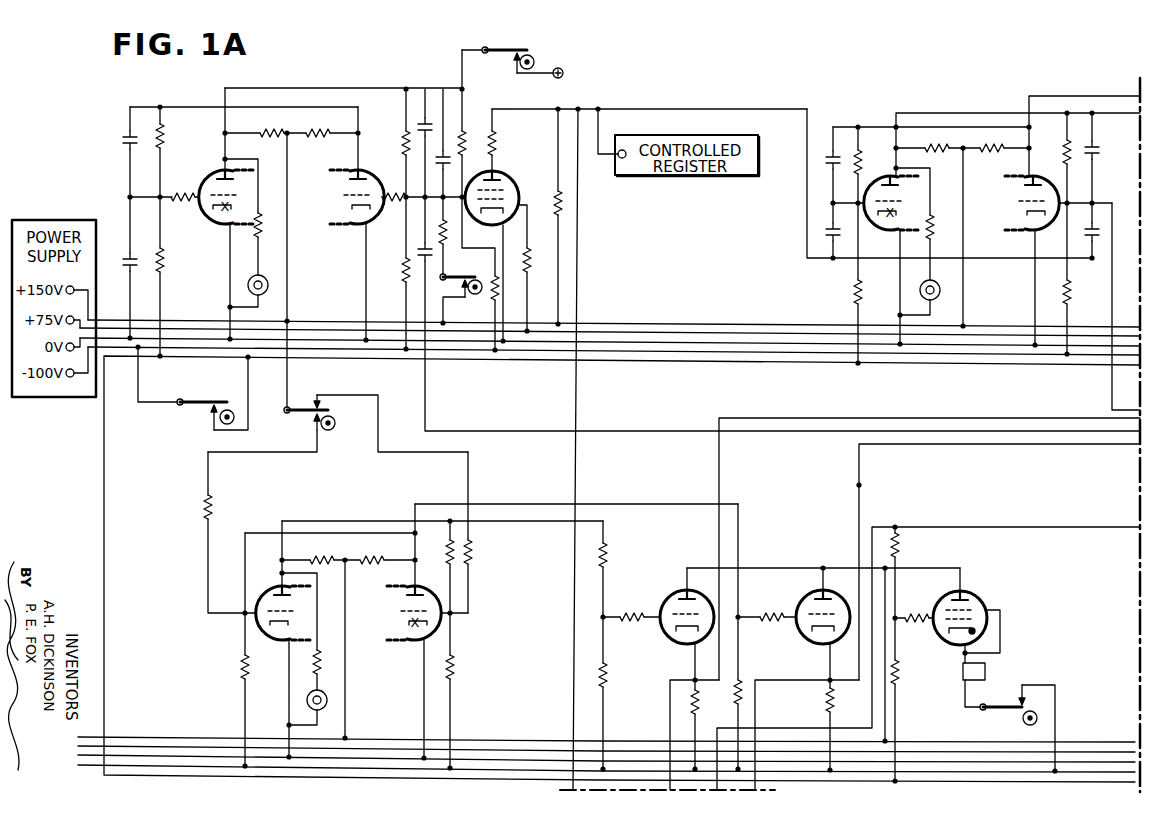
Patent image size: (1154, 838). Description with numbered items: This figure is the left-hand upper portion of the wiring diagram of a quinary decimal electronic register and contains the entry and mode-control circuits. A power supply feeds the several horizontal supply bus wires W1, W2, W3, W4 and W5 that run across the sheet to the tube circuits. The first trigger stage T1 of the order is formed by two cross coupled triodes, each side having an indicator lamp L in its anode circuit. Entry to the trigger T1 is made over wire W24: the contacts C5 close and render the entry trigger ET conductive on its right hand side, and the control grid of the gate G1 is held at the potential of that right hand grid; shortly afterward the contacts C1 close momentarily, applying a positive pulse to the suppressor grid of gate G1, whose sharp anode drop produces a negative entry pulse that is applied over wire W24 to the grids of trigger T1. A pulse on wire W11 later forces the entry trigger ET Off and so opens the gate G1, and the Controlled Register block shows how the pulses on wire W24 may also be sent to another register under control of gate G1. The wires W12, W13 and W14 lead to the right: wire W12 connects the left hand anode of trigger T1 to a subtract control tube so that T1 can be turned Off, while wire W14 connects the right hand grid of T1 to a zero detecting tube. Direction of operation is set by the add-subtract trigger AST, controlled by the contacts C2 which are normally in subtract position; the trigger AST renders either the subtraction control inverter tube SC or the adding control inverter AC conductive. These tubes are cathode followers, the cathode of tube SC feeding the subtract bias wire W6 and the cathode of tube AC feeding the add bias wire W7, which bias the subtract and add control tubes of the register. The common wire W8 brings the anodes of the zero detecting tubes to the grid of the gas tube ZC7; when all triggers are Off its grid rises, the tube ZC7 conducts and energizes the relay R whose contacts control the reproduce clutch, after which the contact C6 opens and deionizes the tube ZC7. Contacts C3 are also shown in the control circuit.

The +150V supply bus wire W1 is at (616, 310).
The +75V supply bus wire W2 is at (653, 334).
The 0V supply bus wire W3 is at (691, 343).
The -100V supply bus wire W4 is at (736, 353).
The supply bus wire W5 is at (778, 363).
The subtract bias wire W6 is at (873, 421).
The add bias wire W7 is at (858, 485).
The common wire W8 is at (986, 528).
The wire W11 is at (426, 402).
The wire W12 is at (960, 113).
The wire W13 is at (1095, 97).
The wire W14 is at (1129, 197).
The wire W24 is at (807, 233).
The contacts C1 is at (518, 48).
The contacts C2 is at (331, 412).
The relay contact C3 is at (218, 399).
The contacts C5 is at (478, 277).
The contact C6 is at (1018, 710).
The gate G1 is at (509, 188).
The entry trigger ET is at (342, 197).
The trigger stage T1 is at (1015, 203).
The add-subtract trigger AST is at (395, 613).
The subtraction control inverter tube SC is at (668, 638).
The adding control inverter AC is at (803, 637).
The zero control tube ZC7 is at (941, 640).
The relay R is at (986, 671).
The indicator lamp L is at (262, 279).